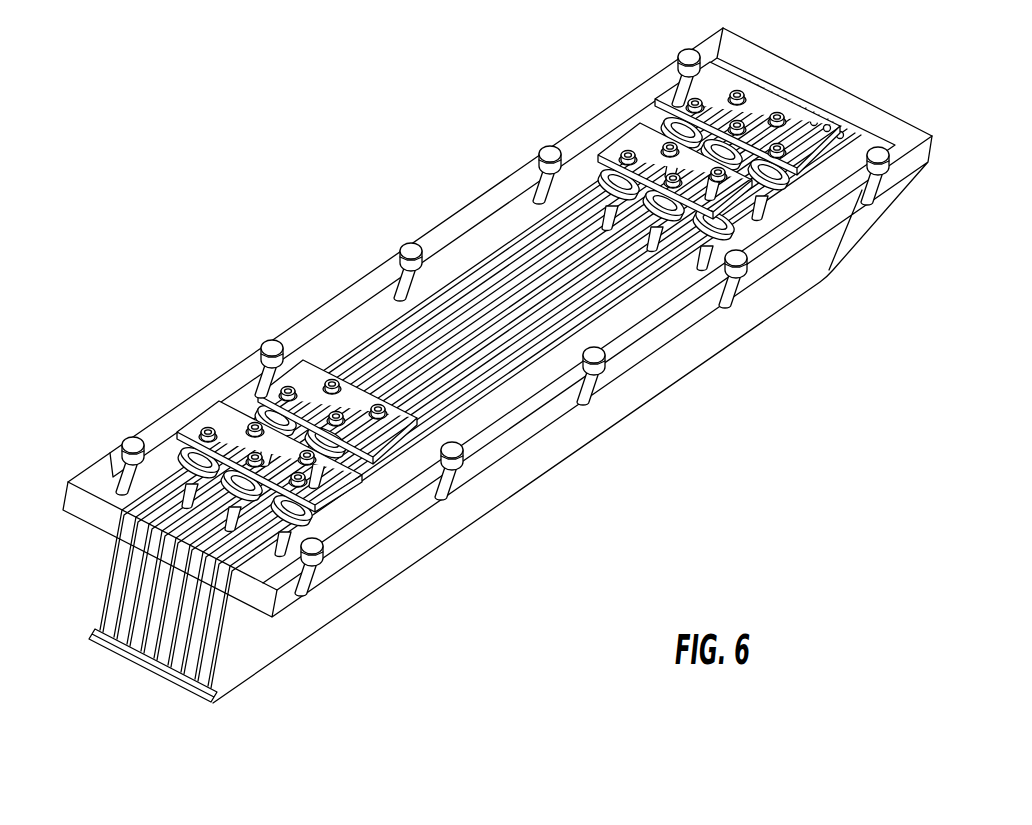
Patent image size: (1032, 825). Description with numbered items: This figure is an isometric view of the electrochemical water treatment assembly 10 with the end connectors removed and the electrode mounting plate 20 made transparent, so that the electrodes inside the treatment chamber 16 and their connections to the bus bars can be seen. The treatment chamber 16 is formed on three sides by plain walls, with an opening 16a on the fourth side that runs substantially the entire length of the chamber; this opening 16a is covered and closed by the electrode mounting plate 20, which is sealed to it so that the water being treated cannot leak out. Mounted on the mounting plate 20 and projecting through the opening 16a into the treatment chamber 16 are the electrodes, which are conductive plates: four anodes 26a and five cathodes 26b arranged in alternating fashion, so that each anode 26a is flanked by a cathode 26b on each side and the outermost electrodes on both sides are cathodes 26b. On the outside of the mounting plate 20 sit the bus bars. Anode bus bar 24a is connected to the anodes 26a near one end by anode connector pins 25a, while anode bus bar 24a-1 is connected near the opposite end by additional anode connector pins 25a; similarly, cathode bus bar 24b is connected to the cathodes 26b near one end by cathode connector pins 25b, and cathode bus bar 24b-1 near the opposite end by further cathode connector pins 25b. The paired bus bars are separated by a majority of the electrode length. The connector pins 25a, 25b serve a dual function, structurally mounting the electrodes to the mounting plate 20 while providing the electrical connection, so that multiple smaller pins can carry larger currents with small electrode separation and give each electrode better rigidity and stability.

The assembly 10 is at (472, 390).
The treatment chamber 16 is at (258, 673).
The opening 16a is at (147, 503).
The electrode mounting plate 20 is at (446, 232).
The anode bus bar 24a is at (300, 372).
The cathode bus bar 24b is at (220, 402).
The anode bus bar 24a-1 is at (634, 140).
The cathode bus bar 24b-1 is at (672, 93).
The anode connector pins 25a is at (616, 200).
The cathode connector pins 25b is at (770, 197).
The anodes 26a is at (217, 637).
The cathodes 26b is at (197, 685).